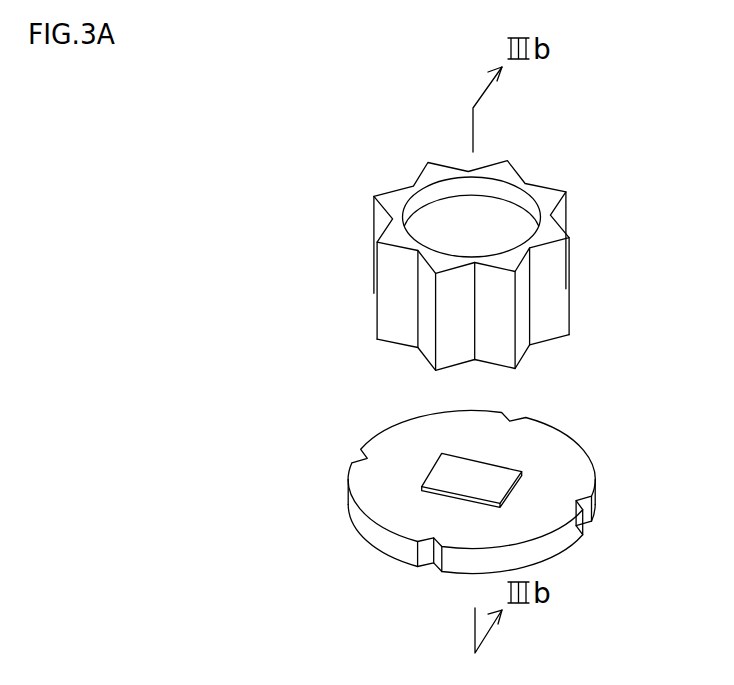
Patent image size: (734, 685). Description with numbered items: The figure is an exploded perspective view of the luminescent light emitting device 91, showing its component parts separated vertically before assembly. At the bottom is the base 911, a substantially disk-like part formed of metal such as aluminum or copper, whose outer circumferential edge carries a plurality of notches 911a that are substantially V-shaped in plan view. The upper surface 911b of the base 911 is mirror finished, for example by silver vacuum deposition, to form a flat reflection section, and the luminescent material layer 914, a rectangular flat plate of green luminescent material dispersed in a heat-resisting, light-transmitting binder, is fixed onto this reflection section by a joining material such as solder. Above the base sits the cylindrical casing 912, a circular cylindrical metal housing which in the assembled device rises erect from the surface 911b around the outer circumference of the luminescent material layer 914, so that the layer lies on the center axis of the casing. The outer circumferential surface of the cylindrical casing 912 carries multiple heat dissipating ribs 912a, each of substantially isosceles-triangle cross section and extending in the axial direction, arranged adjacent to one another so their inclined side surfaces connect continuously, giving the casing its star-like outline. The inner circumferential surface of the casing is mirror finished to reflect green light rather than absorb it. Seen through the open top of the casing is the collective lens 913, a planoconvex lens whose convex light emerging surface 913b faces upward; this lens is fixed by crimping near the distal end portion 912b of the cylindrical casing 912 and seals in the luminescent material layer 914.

The luminescent light emitting device 91 is at (280, 133).
The base 911 is at (353, 523).
The notch 911a is at (417, 567).
The surface 911b is at (410, 455).
The cylindrical casing 912 is at (373, 217).
The heat dissipating rib 912a is at (377, 308).
The distal end portion 912b is at (397, 198).
The collective lens 913 is at (507, 227).
The light emerging surface 913b is at (485, 220).
The luminescent material layer 914 is at (510, 468).